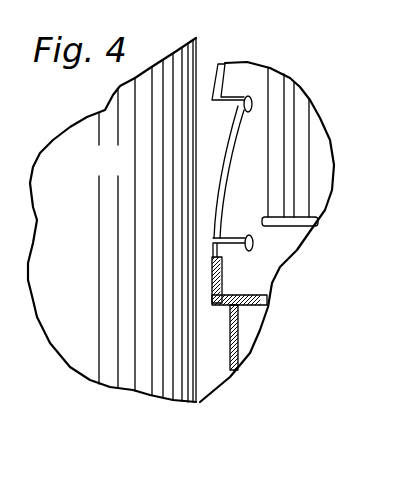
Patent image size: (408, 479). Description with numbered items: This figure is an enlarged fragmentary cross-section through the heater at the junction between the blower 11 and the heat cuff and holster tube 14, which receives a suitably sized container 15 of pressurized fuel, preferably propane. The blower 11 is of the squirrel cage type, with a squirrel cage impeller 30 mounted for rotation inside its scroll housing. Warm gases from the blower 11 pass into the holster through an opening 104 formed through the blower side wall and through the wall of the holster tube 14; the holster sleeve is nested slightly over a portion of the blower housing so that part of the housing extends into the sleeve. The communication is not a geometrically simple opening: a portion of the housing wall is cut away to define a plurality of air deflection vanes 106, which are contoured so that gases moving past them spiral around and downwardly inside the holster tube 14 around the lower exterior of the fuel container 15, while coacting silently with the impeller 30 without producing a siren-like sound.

The blower 11 is at (210, 297).
The heat cuff and holster tube 14 is at (240, 340).
The container of pressurized fuel 15 is at (172, 85).
The squirrel cage impeller 30 is at (267, 97).
The opening 104 is at (235, 302).
The air deflection vanes 106 is at (225, 146).